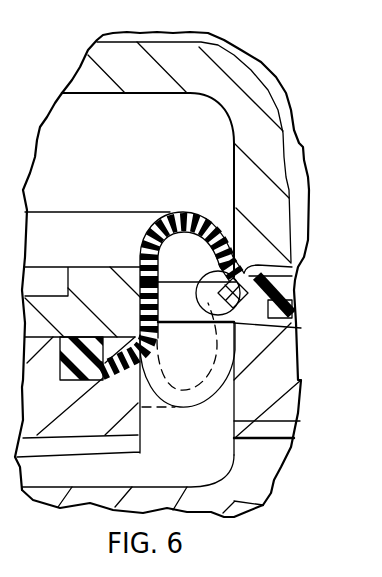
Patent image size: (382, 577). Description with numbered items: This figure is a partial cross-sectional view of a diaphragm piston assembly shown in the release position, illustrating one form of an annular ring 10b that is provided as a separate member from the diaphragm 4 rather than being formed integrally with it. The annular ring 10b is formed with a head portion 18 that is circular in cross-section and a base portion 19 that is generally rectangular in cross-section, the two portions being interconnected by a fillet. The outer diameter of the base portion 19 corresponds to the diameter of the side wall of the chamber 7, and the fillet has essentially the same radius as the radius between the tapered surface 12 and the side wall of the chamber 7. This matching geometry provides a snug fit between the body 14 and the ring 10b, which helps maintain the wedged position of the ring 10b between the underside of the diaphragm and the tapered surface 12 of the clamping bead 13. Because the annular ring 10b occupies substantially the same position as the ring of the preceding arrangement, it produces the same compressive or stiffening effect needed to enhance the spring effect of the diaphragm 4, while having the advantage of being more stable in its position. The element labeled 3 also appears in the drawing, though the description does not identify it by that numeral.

The contact spring 3 is at (217, 213).
The diaphragm 4 is at (141, 262).
The chamber 7 is at (211, 431).
The annular ring 10b is at (298, 270).
The tapered surface 12 is at (250, 323).
The clamping bead 13 is at (285, 296).
The body 14 is at (288, 394).
The head portion 18 is at (220, 282).
The base portion 19 is at (212, 312).